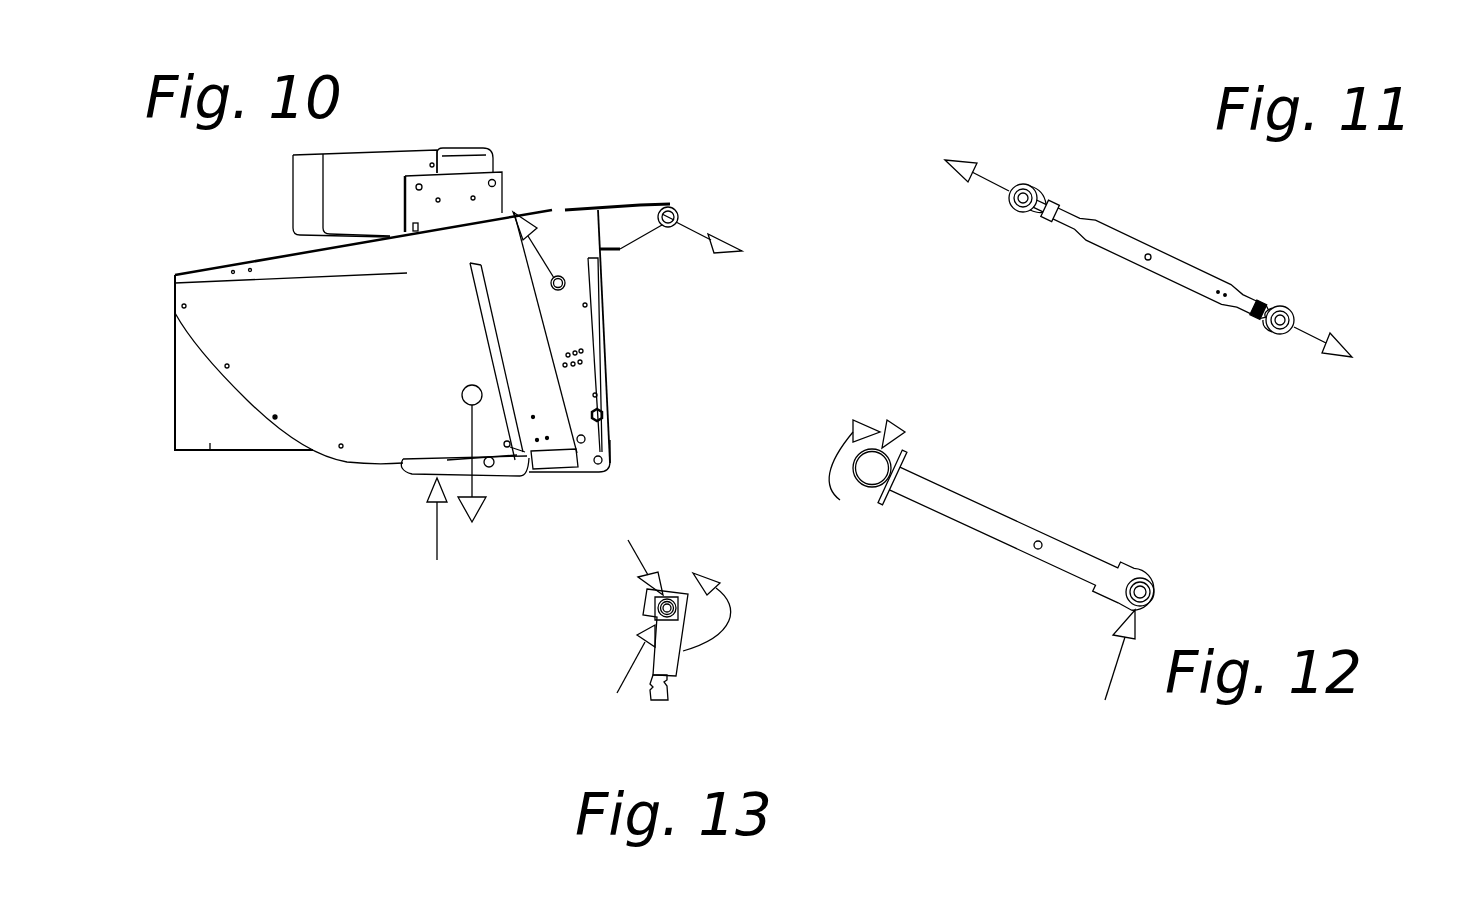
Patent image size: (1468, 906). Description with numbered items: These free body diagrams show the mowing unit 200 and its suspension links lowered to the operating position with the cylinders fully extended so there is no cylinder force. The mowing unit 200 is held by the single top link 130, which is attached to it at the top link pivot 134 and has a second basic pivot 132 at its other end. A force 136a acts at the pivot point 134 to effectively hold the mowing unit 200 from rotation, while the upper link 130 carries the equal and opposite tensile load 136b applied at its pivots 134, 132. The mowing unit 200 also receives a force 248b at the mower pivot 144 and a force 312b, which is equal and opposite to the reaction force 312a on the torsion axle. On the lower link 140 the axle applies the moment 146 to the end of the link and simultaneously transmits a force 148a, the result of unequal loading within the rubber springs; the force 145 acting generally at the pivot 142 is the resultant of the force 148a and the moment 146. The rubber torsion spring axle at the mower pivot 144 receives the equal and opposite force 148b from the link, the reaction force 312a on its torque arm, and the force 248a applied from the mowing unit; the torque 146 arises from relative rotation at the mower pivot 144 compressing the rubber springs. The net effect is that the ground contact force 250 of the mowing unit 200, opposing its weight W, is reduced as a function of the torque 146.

In FIG. 10, the mowing unit 200 is at (262, 370).
In FIG. 10, the ground contact force 250 is at (407, 537).
In FIG. 10, the weight direction arrow W is at (481, 476).
In FIG. 10, the top link pivot 134 is at (672, 206).
In FIG. 11, the top link pivot 134 is at (1032, 184).
In FIG. 10, the force 136a is at (750, 256).
In FIG. 11, the force 136b is at (1164, 253).
In FIG. 10, the force 248b is at (490, 245).
In FIG. 13, the force 248a is at (666, 547).
In FIG. 10, the mower pivot 144 is at (565, 288).
In FIG. 12, the mower pivot 144 is at (870, 472).
In FIG. 13, the mower pivot 144 is at (680, 608).
In FIG. 10, the force 312b is at (538, 344).
In FIG. 13, the reaction force 312a is at (668, 682).
In FIG. 11, the top link 130 is at (1105, 232).
In FIG. 11, the pivot 132 is at (1285, 308).
In FIG. 12, the lower link 140 is at (1075, 548).
In FIG. 12, the pivot 142 is at (1143, 580).
In FIG. 12, the force 145 is at (1099, 679).
In FIG. 12, the torque 146 is at (821, 460).
In FIG. 13, the torque 146 is at (722, 591).
In FIG. 12, the force 148a is at (880, 452).
In FIG. 13, the force 148b is at (591, 680).